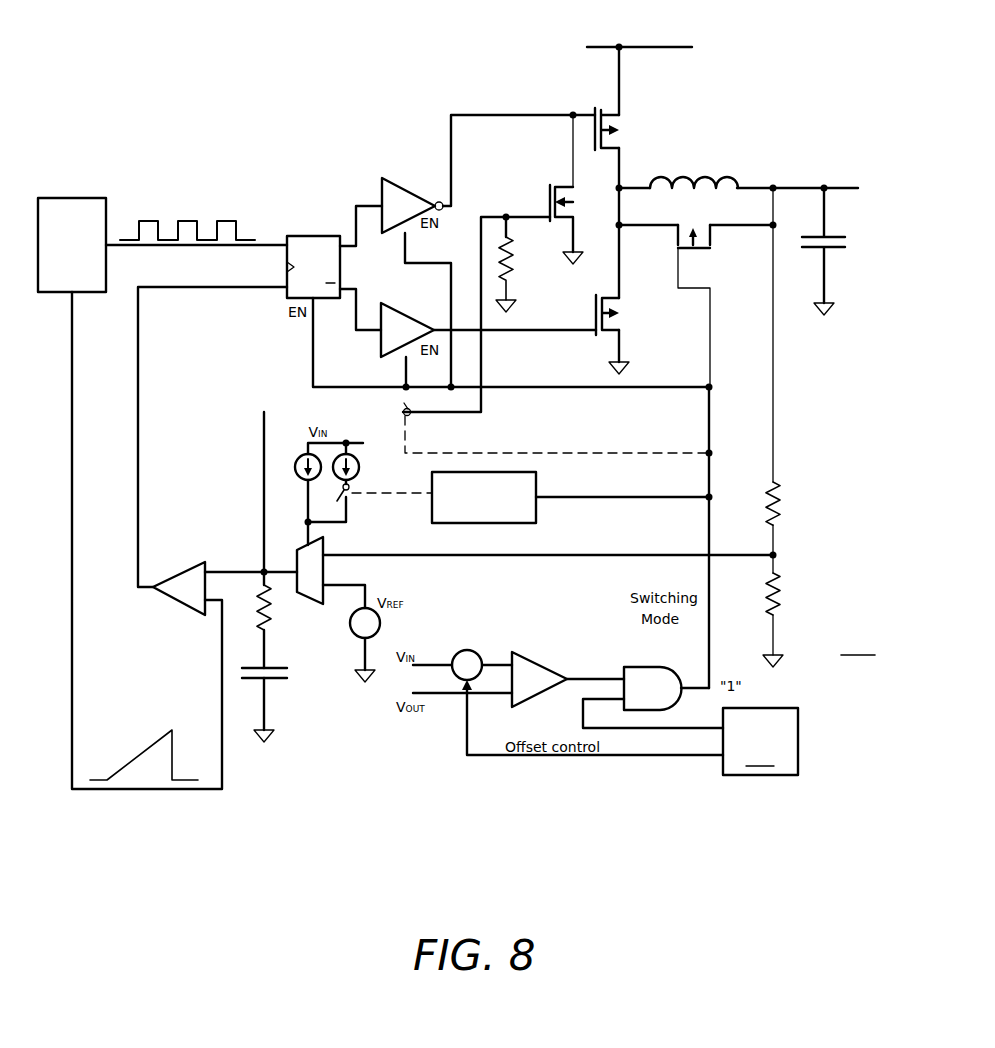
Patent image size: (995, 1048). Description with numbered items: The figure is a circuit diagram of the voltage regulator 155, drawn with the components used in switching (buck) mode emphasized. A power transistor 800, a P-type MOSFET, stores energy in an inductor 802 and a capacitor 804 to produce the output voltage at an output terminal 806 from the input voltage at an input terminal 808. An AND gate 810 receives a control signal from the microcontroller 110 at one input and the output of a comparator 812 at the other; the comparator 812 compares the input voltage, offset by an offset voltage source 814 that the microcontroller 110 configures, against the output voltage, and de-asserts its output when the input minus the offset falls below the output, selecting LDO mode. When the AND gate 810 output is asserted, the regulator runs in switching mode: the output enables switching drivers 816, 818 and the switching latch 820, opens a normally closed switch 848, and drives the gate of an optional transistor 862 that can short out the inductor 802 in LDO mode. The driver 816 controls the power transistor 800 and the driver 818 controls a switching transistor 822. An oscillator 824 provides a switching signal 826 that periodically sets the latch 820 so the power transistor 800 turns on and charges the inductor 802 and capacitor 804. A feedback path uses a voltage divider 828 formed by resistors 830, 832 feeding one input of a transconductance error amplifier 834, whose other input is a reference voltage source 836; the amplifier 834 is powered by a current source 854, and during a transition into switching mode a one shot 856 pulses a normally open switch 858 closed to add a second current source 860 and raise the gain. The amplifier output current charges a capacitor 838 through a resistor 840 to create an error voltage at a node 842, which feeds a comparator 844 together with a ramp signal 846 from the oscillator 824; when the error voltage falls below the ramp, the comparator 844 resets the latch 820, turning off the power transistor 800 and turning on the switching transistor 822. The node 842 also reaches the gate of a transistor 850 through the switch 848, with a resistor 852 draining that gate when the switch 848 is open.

The input terminal 808 is at (622, 45).
The power transistor 800 is at (622, 128).
The inductor 802 is at (720, 172).
The output terminal 806 is at (824, 184).
The capacitor 804 is at (840, 249).
The optional transistor 862 is at (705, 250).
The switching transistor 822 is at (593, 315).
The transistor 850 is at (548, 200).
The resistor 852 is at (512, 254).
The switching driver 816 is at (380, 190).
The switching driver 818 is at (402, 312).
The switching latch 820 is at (316, 233).
The oscillator 824 is at (68, 196).
The switching signal 826 is at (188, 218).
The normally closed switch 848 is at (403, 409).
The current source 854 is at (297, 461).
The second current source 860 is at (360, 468).
The normally open switch 858 is at (352, 497).
The one shot 856 is at (540, 487).
The resistor 830 is at (783, 505).
The resistor 832 is at (783, 597).
The voltage divider 828 is at (822, 541).
The voltage regulator 155 is at (858, 644).
The microcontroller 110 is at (760, 741).
The AND gate 810 is at (640, 666).
The comparator 812 is at (540, 657).
The offset voltage source 814 is at (455, 655).
The comparator 844 is at (170, 573).
The node 842 is at (262, 570).
The resistor 840 is at (258, 612).
The capacitor 838 is at (285, 665).
The transconductance error amplifier 834 is at (328, 576).
The reference voltage source 836 is at (354, 637).
The ramp signal 846 is at (126, 762).